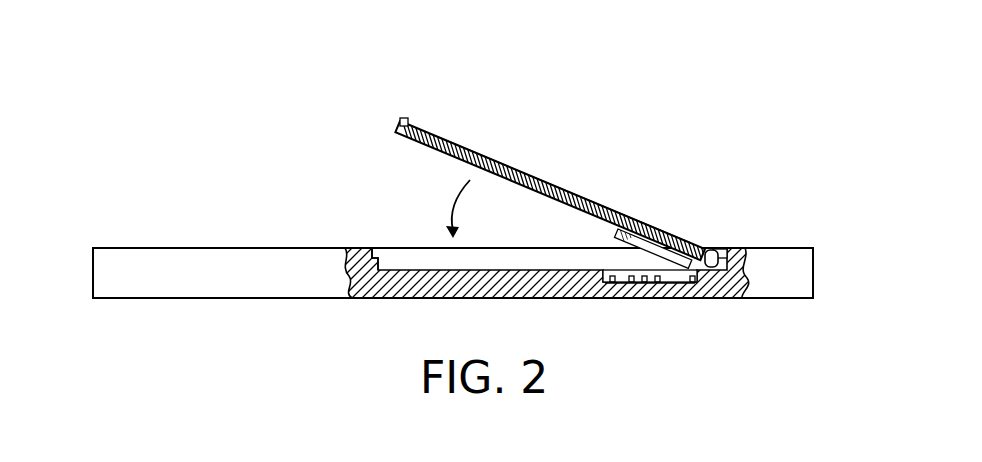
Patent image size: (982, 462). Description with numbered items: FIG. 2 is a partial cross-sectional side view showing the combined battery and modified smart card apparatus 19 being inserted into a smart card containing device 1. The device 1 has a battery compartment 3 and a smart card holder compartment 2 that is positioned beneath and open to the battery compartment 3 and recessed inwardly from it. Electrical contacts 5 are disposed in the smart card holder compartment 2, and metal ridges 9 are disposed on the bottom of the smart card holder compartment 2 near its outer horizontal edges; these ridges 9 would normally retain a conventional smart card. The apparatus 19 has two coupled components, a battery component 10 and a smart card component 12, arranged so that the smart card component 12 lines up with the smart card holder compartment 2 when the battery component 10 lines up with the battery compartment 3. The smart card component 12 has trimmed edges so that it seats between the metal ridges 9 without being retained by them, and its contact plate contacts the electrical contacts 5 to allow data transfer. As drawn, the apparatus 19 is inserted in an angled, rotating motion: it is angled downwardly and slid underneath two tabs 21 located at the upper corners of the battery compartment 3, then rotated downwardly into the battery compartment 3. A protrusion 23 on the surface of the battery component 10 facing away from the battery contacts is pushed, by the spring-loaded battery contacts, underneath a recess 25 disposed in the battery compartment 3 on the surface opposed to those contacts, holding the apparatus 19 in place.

The smart card containing device 1 is at (828, 228).
The smart card holder compartment 2 is at (668, 284).
The battery compartment 3 is at (521, 268).
The electrical contacts 5 is at (643, 282).
The metal ridges 9 is at (612, 282).
The battery component 10 is at (411, 124).
The smart card component 12 is at (620, 240).
The combined battery and modified smart card apparatus 19 is at (543, 175).
The tabs 21 is at (718, 250).
The protrusion 23 is at (399, 126).
The recess 25 is at (382, 267).